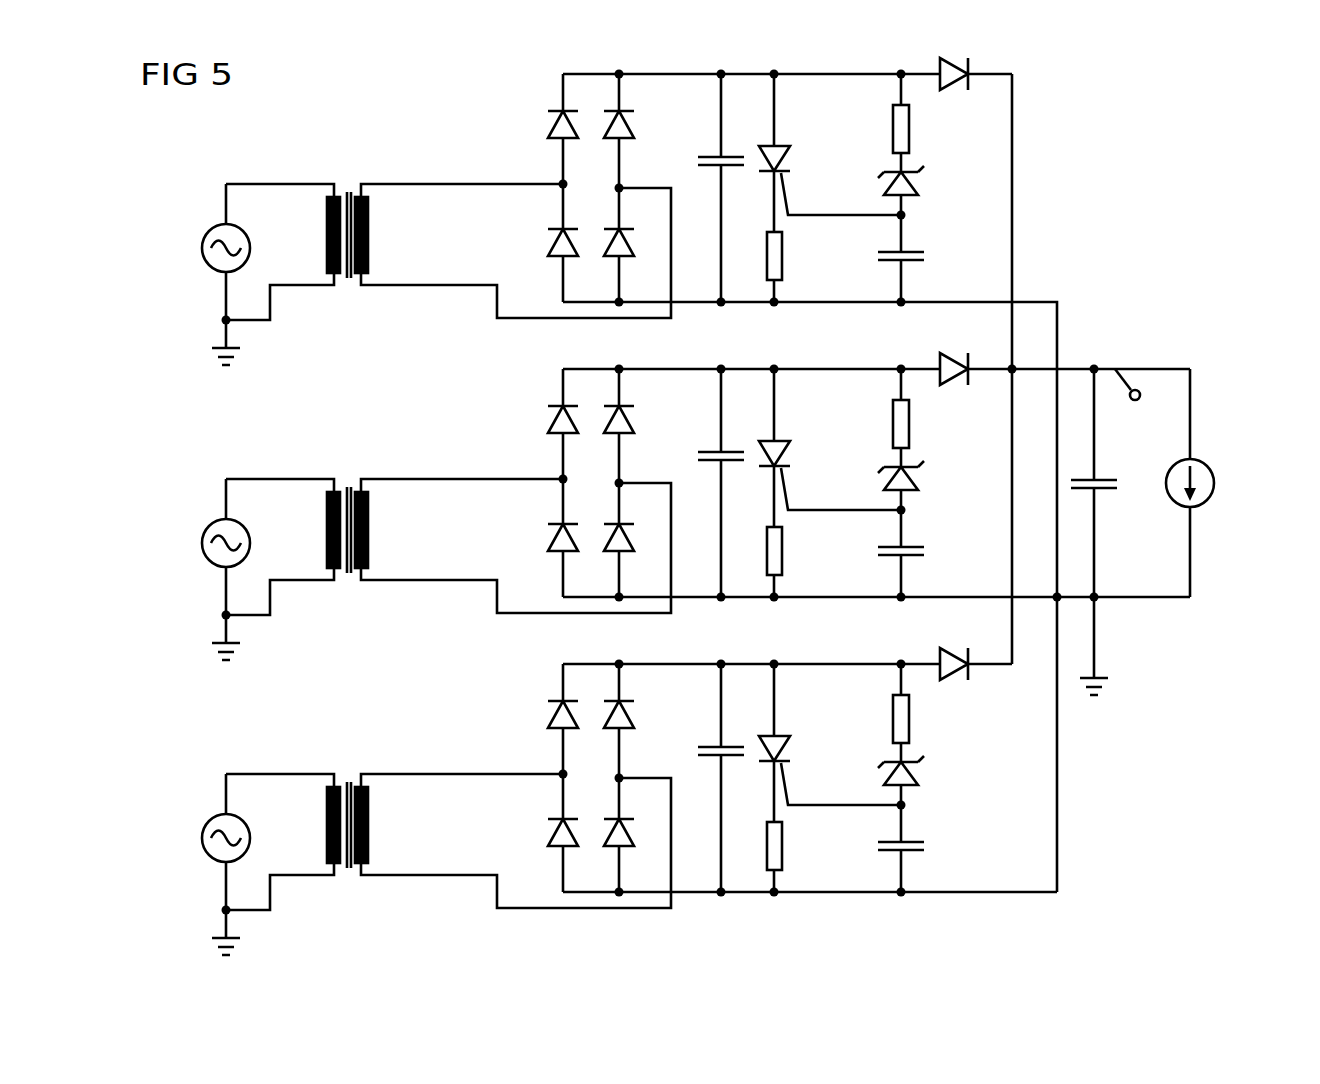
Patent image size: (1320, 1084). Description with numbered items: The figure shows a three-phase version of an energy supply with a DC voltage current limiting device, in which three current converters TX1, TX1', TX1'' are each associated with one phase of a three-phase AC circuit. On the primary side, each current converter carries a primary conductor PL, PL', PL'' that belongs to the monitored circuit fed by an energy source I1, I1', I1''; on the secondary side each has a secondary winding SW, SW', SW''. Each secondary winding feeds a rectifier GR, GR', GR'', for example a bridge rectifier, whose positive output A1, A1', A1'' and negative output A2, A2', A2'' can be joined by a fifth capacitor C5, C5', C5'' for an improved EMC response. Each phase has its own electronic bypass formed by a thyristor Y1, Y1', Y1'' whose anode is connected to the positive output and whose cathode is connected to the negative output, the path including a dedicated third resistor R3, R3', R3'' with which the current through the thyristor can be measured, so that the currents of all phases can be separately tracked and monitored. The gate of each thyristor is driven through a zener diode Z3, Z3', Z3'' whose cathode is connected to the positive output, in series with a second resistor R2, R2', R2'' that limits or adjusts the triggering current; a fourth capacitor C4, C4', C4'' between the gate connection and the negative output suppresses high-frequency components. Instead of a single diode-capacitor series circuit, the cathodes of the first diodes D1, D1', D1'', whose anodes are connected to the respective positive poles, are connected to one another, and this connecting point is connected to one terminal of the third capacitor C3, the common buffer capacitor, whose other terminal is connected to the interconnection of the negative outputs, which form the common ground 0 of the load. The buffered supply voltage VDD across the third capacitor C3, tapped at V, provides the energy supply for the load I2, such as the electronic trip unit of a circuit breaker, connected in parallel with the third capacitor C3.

The energy source I1 is at (200, 254).
The primary conductor PL is at (283, 252).
The current converter TX1 is at (346, 211).
The secondary winding SW is at (513, 251).
The rectifier GR is at (567, 173).
The positive output A1 is at (751, 61).
The negative output A2 is at (810, 595).
The fifth capacitor C5 is at (712, 188).
The thyristor Y1 is at (830, 153).
The third resistor R3 is at (810, 267).
The second resistor R2 is at (866, 123).
The zener diode Z3 is at (930, 208).
The fourth capacitor C4 is at (938, 268).
The first diode D1 is at (976, 101).
The energy source I1' is at (198, 549).
The primary conductor PL' is at (283, 547).
The current converter TX1' is at (348, 506).
The secondary winding SW' is at (513, 546).
The rectifier GR' is at (567, 468).
The positive output A1' is at (751, 354).
The negative output A2' is at (876, 617).
The fifth capacitor C5' is at (710, 483).
The thyristor Y1' is at (830, 448).
The third resistor R3' is at (812, 562).
The second resistor R2' is at (866, 418).
The zener diode Z3' is at (932, 503).
The fourth capacitor C4' is at (940, 563).
The first diode D1' is at (976, 396).
The energy source I1'' is at (196, 844).
The primary conductor PL'' is at (283, 842).
The current converter TX1'' is at (347, 801).
The secondary winding SW'' is at (513, 841).
The rectifier GR'' is at (567, 763).
The positive output A1'' is at (751, 649).
The negative output A2'' is at (810, 910).
The fifth capacitor C5'' is at (709, 778).
The thyristor Y1'' is at (830, 743).
The third resistor R3'' is at (814, 857).
The second resistor R2'' is at (865, 713).
The zener diode Z3'' is at (934, 798).
The fourth capacitor C4'' is at (942, 858).
The first diode D1'' is at (976, 691).
The supply voltage node VDD is at (1099, 369).
The voltage tap V is at (1141, 392).
The third capacitor C3 is at (1103, 475).
The load current source I2 is at (1214, 468).
The ground reference 0 is at (669, 642).